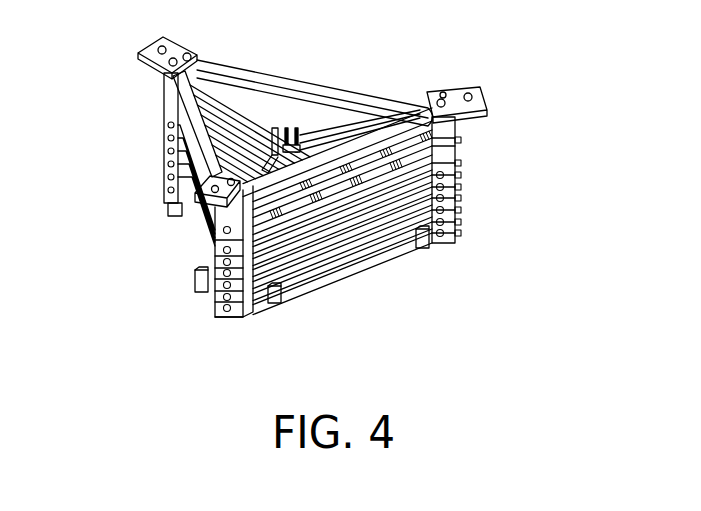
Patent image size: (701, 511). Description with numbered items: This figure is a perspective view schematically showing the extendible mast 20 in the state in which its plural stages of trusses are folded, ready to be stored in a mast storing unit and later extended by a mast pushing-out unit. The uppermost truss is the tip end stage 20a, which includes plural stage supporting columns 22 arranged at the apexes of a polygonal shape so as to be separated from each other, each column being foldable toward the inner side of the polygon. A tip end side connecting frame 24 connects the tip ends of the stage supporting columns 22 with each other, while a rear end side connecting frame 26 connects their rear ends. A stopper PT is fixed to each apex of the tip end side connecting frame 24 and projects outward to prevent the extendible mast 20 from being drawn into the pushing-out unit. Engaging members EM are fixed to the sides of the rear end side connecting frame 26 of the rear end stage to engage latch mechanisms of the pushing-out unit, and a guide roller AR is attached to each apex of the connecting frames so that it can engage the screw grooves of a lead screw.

The extendible mast 20 is at (115, 175).
The tip end stage 20a is at (310, 80).
The stage supporting columns 22 is at (256, 126).
The tip end side connecting frame 24 is at (277, 88).
The rear end side connecting frame 26 is at (390, 153).
The stopper PT is at (141, 46).
The engaging members EM is at (166, 207).
The guide roller AR is at (461, 233).